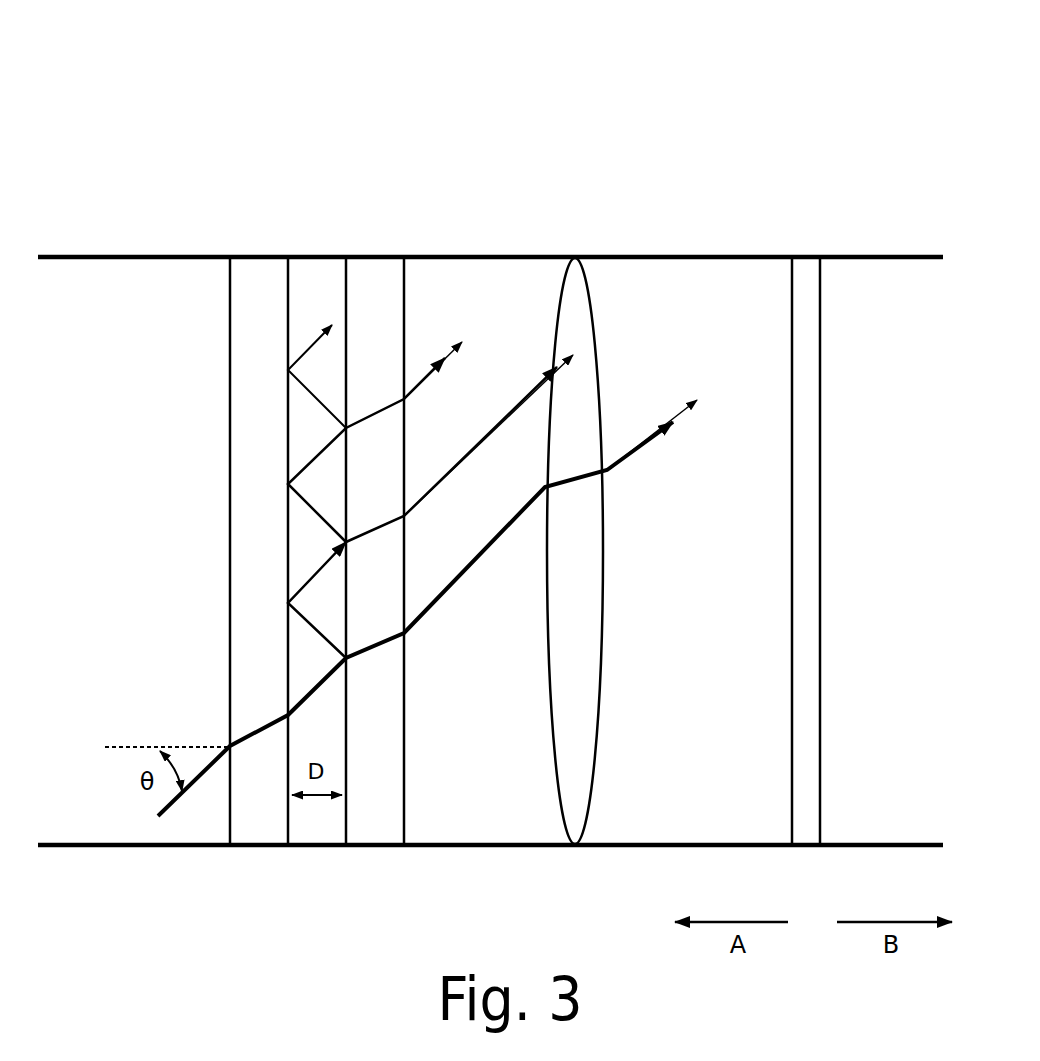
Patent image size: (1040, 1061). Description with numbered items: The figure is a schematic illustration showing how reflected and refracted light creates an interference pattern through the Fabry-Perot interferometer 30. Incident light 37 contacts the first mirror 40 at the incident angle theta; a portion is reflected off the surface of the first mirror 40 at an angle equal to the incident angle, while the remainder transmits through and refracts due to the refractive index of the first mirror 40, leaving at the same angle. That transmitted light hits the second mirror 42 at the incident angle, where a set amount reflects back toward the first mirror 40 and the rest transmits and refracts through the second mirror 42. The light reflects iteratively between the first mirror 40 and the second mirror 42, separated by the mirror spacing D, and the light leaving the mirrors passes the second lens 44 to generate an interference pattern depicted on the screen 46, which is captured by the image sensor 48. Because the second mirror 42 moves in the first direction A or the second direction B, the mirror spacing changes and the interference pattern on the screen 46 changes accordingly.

The Fabry-Perot interferometer 30 is at (490, 422).
The incident light 37 is at (167, 812).
The first mirror 40 is at (256, 277).
The second mirror 42 is at (369, 278).
The second lens 44 is at (572, 276).
The screen 46 is at (790, 295).
The image sensor 48 is at (805, 332).